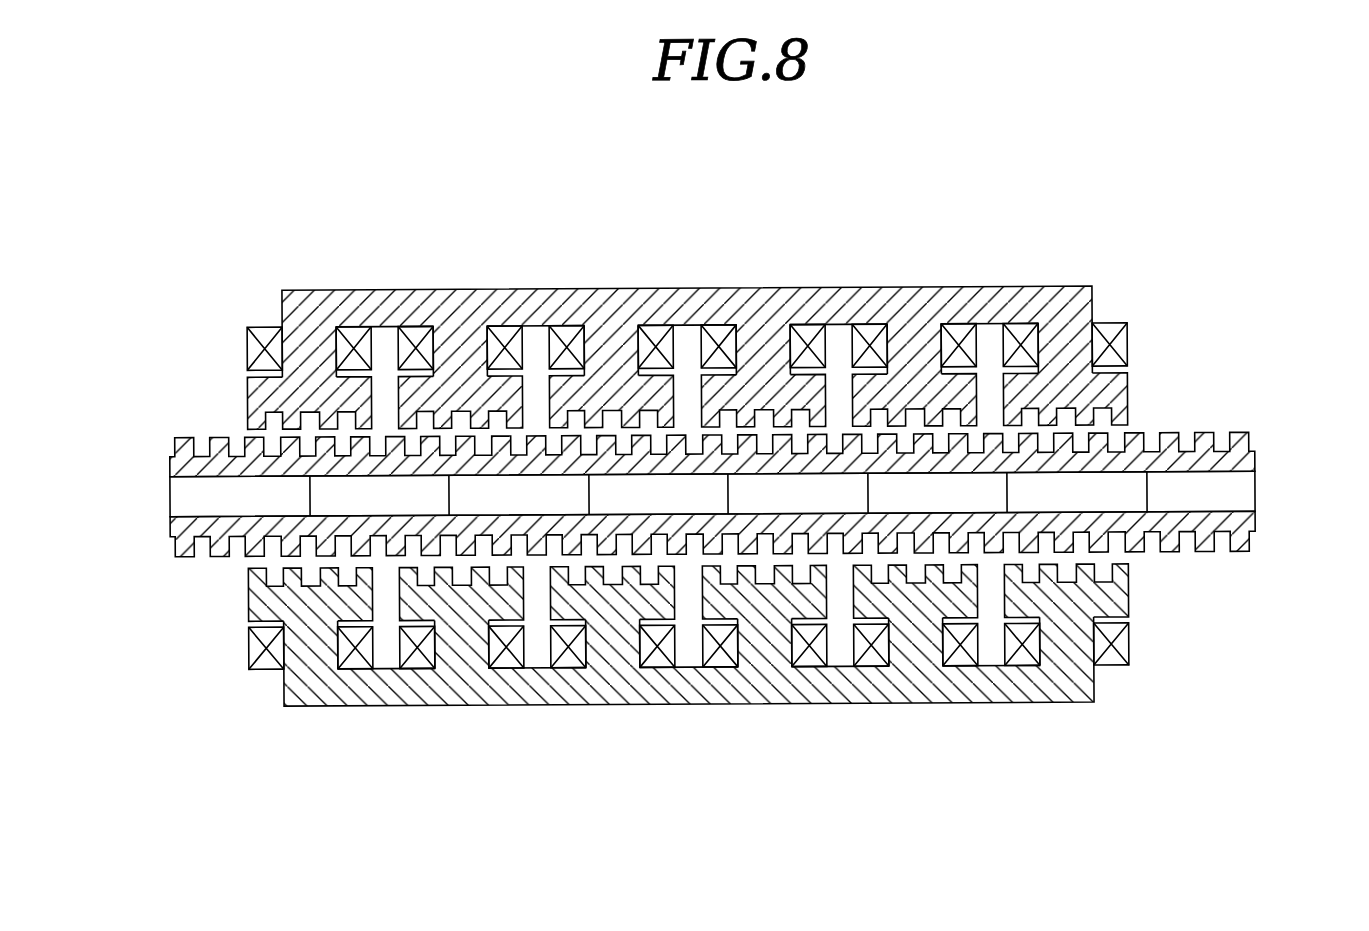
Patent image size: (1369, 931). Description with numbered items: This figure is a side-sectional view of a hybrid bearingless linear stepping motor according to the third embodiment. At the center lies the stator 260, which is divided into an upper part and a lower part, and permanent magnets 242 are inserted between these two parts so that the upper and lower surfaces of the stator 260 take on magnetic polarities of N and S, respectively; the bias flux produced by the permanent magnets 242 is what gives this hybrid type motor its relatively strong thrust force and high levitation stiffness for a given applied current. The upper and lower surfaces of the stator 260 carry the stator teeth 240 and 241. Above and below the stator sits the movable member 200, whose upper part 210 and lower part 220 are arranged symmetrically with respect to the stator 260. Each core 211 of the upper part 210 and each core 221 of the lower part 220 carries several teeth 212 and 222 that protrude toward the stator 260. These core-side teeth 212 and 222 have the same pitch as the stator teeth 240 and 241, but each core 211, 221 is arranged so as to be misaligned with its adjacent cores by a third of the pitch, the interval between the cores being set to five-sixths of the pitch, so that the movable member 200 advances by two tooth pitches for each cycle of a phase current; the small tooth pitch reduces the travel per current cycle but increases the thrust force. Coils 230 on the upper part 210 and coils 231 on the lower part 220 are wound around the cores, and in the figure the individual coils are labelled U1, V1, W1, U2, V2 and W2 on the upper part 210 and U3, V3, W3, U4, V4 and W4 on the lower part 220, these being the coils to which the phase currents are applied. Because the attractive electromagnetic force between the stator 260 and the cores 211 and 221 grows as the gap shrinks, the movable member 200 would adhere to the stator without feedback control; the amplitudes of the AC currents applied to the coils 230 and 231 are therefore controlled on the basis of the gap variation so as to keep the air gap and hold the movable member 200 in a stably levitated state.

The movable member 200 is at (118, 418).
The upper part 210 is at (250, 402).
The core 211 is at (1078, 349).
The teeth 212 is at (1125, 411).
The lower part 220 is at (250, 598).
The core 221 is at (1082, 641).
The teeth 222 is at (1120, 574).
The coil 230 is at (257, 326).
The coil 231 is at (250, 647).
The stator teeth 240 is at (1247, 437).
The stator teeth 241 is at (1247, 542).
The permanent magnets 242 is at (1257, 496).
The stator 260 is at (1254, 432).
The U-phase coil (upper, first) U1 is at (350, 328).
The V-phase coil (upper, first) V1 is at (501, 328).
The W-phase coil (upper, first) W1 is at (652, 328).
The U-phase coil (upper, second) U2 is at (804, 328).
The V-phase coil (upper, second) V2 is at (955, 328).
The W-phase coil (upper, second) W2 is at (1106, 328).
The U-phase coil (lower, first) U3 is at (350, 665).
The V-phase coil (lower, first) V3 is at (501, 665).
The W-phase coil (lower, first) W3 is at (652, 665).
The U-phase coil (lower, second) U4 is at (804, 665).
The V-phase coil (lower, second) V4 is at (955, 665).
The W-phase coil (lower, second) W4 is at (1106, 665).